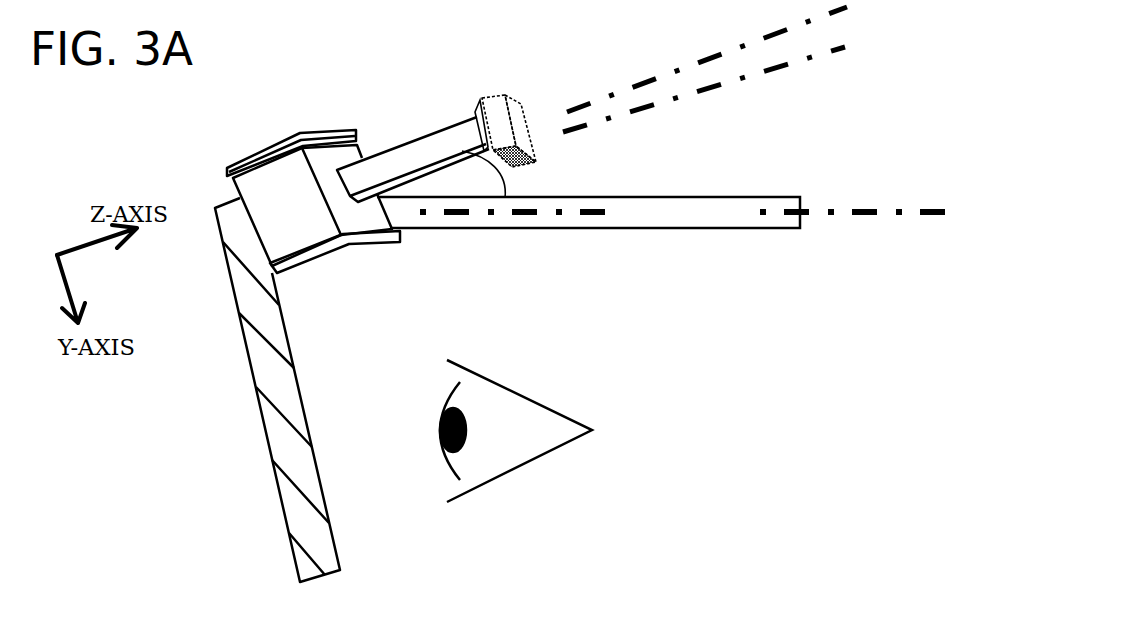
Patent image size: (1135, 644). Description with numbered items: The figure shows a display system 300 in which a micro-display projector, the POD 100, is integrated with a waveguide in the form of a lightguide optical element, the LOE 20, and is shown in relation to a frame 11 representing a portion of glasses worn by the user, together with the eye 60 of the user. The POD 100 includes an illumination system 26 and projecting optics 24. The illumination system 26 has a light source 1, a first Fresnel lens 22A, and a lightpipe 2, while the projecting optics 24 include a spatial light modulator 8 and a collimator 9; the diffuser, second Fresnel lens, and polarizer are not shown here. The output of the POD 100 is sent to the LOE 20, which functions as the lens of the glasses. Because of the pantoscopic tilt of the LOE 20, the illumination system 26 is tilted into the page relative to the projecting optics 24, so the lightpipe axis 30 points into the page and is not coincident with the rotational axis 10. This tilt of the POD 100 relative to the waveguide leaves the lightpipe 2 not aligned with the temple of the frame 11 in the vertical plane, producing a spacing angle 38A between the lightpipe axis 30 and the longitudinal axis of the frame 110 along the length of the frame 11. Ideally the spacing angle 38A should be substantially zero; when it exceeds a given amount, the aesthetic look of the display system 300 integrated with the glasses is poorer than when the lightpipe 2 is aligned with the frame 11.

The display system 300 is at (133, 108).
The collimator 9 is at (270, 147).
The spatial light modulator 8 is at (340, 268).
The lightpipe 2 is at (413, 159).
The light source 1 is at (509, 131).
The first Fresnel lens 22A is at (477, 101).
The projecting optics 24 is at (318, 88).
The illumination system 26 is at (383, 88).
The micro-display projector (POD) 100 is at (600, 50).
The rotational axis 10 is at (707, 59).
The lightpipe axis 30 is at (704, 89).
The spacing angle 38A is at (494, 180).
The frame 11 is at (588, 212).
The longitudinal axis of the frame 110 is at (854, 214).
The lightguide optical element (LOE) 20 is at (277, 390).
The eye 60 is at (516, 431).